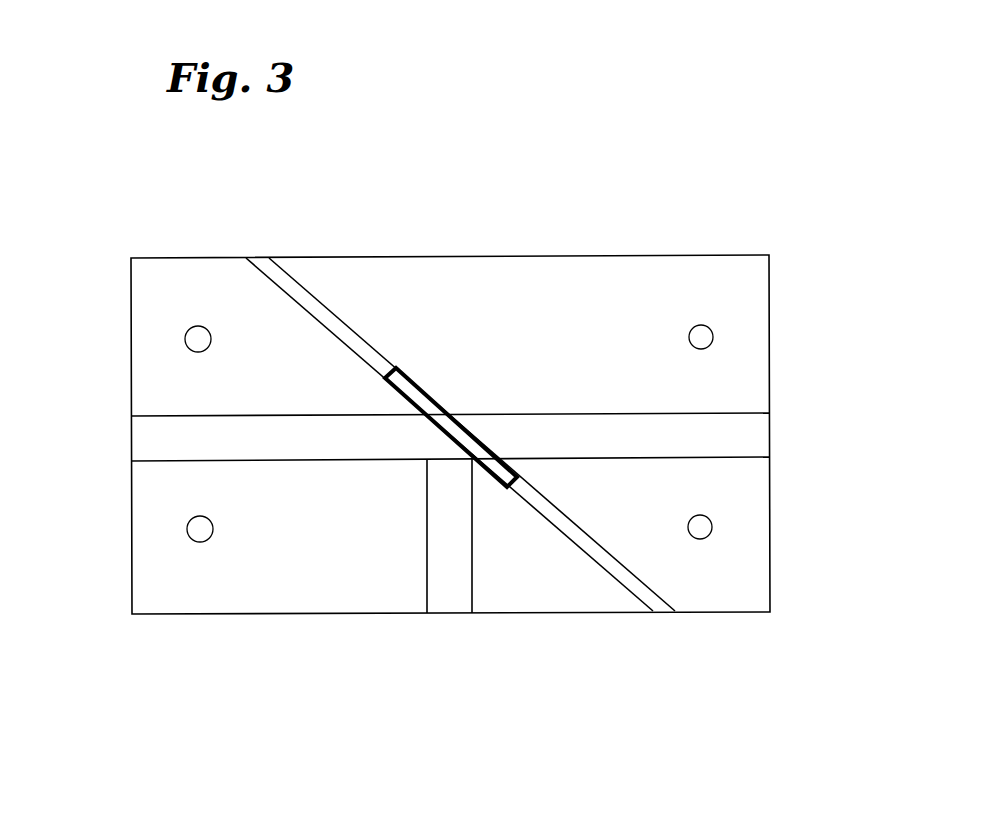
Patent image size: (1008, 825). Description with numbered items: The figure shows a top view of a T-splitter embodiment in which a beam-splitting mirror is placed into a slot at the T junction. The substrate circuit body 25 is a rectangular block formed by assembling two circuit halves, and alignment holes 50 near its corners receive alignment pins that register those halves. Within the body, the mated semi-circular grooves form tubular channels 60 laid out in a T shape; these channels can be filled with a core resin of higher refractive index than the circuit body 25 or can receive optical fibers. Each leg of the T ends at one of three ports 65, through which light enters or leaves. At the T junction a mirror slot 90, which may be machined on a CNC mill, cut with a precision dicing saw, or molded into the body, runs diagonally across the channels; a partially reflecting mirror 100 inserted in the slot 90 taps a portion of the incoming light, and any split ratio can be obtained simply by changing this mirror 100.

The substrate circuit body 25 is at (433, 275).
The alignment holes 50 is at (192, 340).
The tubular channels 60 is at (732, 437).
The ports 65 is at (770, 441).
The mirror slot 90 is at (607, 562).
The partially reflecting mirror 100 is at (427, 403).